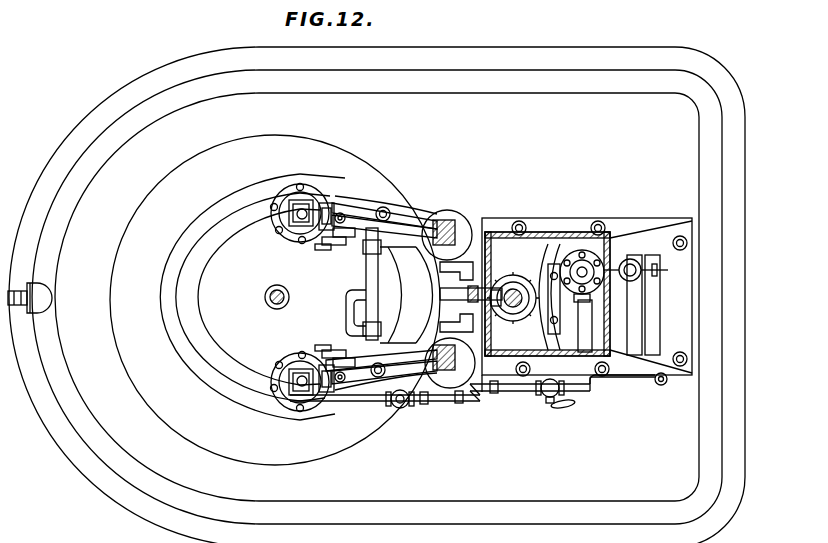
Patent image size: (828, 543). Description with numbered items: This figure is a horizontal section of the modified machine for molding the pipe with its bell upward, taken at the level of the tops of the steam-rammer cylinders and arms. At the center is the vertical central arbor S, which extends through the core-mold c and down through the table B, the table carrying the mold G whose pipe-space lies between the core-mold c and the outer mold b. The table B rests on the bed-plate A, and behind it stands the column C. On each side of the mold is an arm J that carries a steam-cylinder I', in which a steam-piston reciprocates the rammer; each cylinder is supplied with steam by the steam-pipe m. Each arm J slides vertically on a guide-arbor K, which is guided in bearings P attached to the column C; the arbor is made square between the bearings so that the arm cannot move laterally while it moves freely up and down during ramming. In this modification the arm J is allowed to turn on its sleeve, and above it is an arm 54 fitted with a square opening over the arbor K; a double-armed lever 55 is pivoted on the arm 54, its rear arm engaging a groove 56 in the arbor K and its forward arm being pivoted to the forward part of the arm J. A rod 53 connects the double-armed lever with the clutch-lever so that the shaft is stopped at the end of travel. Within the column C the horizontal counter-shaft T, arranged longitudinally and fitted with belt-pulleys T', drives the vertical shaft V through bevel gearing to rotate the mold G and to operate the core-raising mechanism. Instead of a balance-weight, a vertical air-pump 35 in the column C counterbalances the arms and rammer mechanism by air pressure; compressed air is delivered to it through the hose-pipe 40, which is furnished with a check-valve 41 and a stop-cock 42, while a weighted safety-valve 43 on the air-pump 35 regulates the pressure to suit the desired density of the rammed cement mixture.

The air-pump 35 is at (582, 274).
The hose-pipe 40 is at (478, 398).
The check-valve 41 is at (400, 408).
The stop-cock 42 is at (555, 401).
The weighted safety-valve 43 is at (636, 264).
The rod 53 is at (384, 213).
The arm 54 is at (381, 293).
The double-armed lever 55 is at (384, 369).
The groove 56 is at (437, 297).
The bed-plate A is at (456, 410).
The table B is at (275, 300).
The column C is at (587, 297).
The mold G is at (240, 297).
The arm J is at (398, 285).
The guide-arbor K is at (448, 299).
The bearings P is at (471, 299).
The central arbor S is at (277, 292).
The counter-shaft T is at (577, 320).
The belt-pulleys T' is at (630, 305).
The vertical shaft V is at (513, 300).
The steam-cylinder I' is at (313, 298).
The mold b is at (252, 302).
The core-mold c is at (253, 297).
The steam-pipe m is at (356, 313).